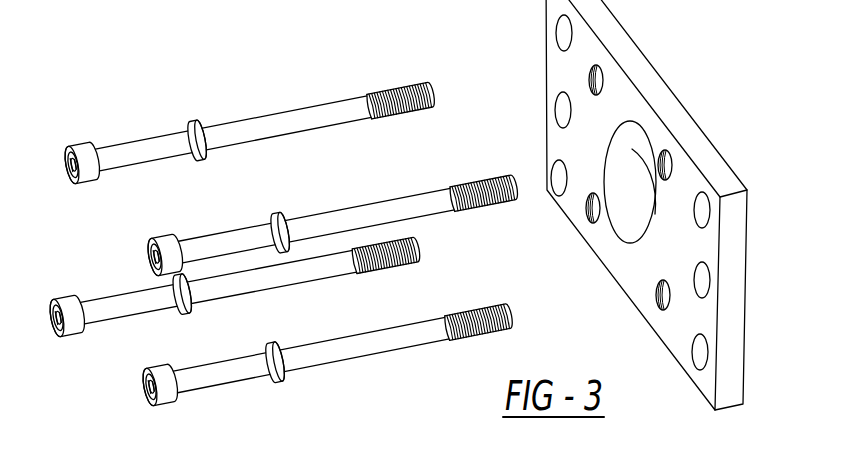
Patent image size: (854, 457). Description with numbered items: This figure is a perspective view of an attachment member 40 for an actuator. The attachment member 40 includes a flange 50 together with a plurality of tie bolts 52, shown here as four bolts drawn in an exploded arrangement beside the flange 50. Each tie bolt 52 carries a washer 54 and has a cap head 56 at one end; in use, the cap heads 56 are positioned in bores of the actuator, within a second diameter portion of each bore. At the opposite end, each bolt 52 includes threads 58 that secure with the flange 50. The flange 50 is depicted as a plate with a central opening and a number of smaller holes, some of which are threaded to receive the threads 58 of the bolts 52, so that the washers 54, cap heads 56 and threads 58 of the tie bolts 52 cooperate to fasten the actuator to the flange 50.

The attachment member 40 is at (270, 220).
The flange 50 is at (662, 97).
The tie bolt 52 is at (322, 115).
The washer 54 is at (197, 124).
The cap head 56 is at (75, 331).
The threads 58 is at (413, 84).